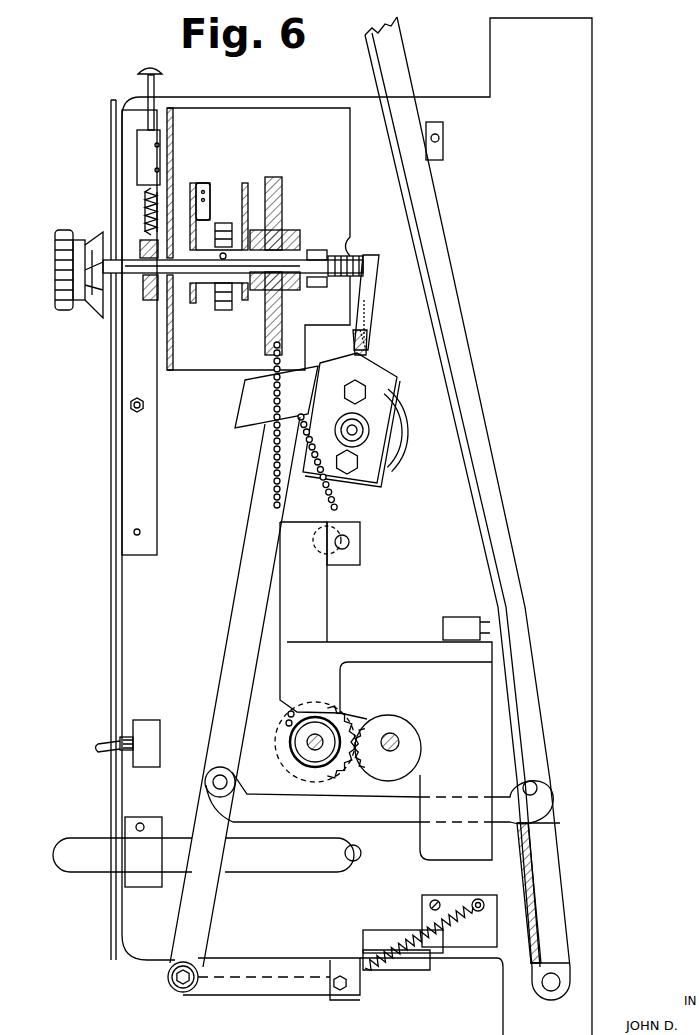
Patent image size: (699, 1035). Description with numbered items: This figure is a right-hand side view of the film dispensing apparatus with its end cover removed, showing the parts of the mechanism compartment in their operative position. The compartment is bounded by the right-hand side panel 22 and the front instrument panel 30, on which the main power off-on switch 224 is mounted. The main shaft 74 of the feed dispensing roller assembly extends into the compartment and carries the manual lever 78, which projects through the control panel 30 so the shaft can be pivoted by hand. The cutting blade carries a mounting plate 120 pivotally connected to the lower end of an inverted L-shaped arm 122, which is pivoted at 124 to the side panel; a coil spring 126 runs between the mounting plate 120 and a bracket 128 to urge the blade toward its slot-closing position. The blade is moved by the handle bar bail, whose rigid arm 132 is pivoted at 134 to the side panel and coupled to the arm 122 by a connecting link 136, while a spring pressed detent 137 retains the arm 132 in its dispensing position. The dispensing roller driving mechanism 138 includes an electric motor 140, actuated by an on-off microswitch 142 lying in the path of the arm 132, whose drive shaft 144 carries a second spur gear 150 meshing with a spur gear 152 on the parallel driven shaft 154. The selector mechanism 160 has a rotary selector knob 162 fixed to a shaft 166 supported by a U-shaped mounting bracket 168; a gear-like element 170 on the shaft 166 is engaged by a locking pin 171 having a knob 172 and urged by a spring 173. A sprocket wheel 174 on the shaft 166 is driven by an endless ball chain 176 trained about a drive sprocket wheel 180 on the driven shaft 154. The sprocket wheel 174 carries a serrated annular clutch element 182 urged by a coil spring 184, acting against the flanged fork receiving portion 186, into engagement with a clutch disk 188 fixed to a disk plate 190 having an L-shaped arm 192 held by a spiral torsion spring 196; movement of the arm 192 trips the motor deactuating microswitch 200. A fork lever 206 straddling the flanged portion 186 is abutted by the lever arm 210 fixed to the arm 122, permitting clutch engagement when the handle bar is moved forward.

The right-hand side panel 22 is at (423, 558).
The front instrument panel 30 is at (120, 385).
The main shaft 74 is at (353, 858).
The manual lever 78 is at (93, 866).
The mounting plate 120 is at (240, 993).
The inverted L-shaped arm 122 is at (241, 613).
The pivot 124 is at (360, 430).
The coil spring 126 is at (368, 966).
The bracket 128 is at (448, 902).
The rigid arm 132 is at (448, 297).
The pivot 134 is at (560, 983).
The connecting link 136 is at (368, 813).
The spring pressed detent 137 is at (438, 137).
The dispensing roller driving mechanism 138 is at (389, 637).
The electric motor 140 is at (461, 701).
The on-off microswitch 142 is at (466, 626).
The drive shaft 144 is at (400, 740).
The second spur gear 150 is at (370, 728).
The spur gear 152 is at (323, 775).
The driven shaft 154 is at (313, 744).
The mechanism 160 is at (258, 147).
The rotary selector knob 162 is at (57, 257).
The shaft 166 is at (356, 264).
The U-shaped mounting bracket 168 is at (345, 186).
The gear-like element 170 is at (150, 240).
The locking pin 171 is at (150, 208).
The knob 172 is at (148, 72).
The spring 173 is at (148, 188).
The sprocket wheel 174 is at (277, 212).
The endless ball chain 176 is at (273, 396).
The drive sprocket wheel 180 is at (298, 737).
The serrated annular clutch element 182 is at (276, 322).
The coil spring 184 is at (340, 277).
The flanged fork receiving portion 186 is at (309, 252).
The clutch disk 188 is at (258, 318).
The disk plate 190 is at (236, 312).
The L-shaped arm 192 is at (228, 240).
The spiral torsion spring 196 is at (277, 190).
The motor deactuating microswitch 200 is at (243, 160).
The fork lever 206 is at (325, 298).
The lever arm 210 is at (367, 353).
The main power off-on switch 224 is at (97, 743).